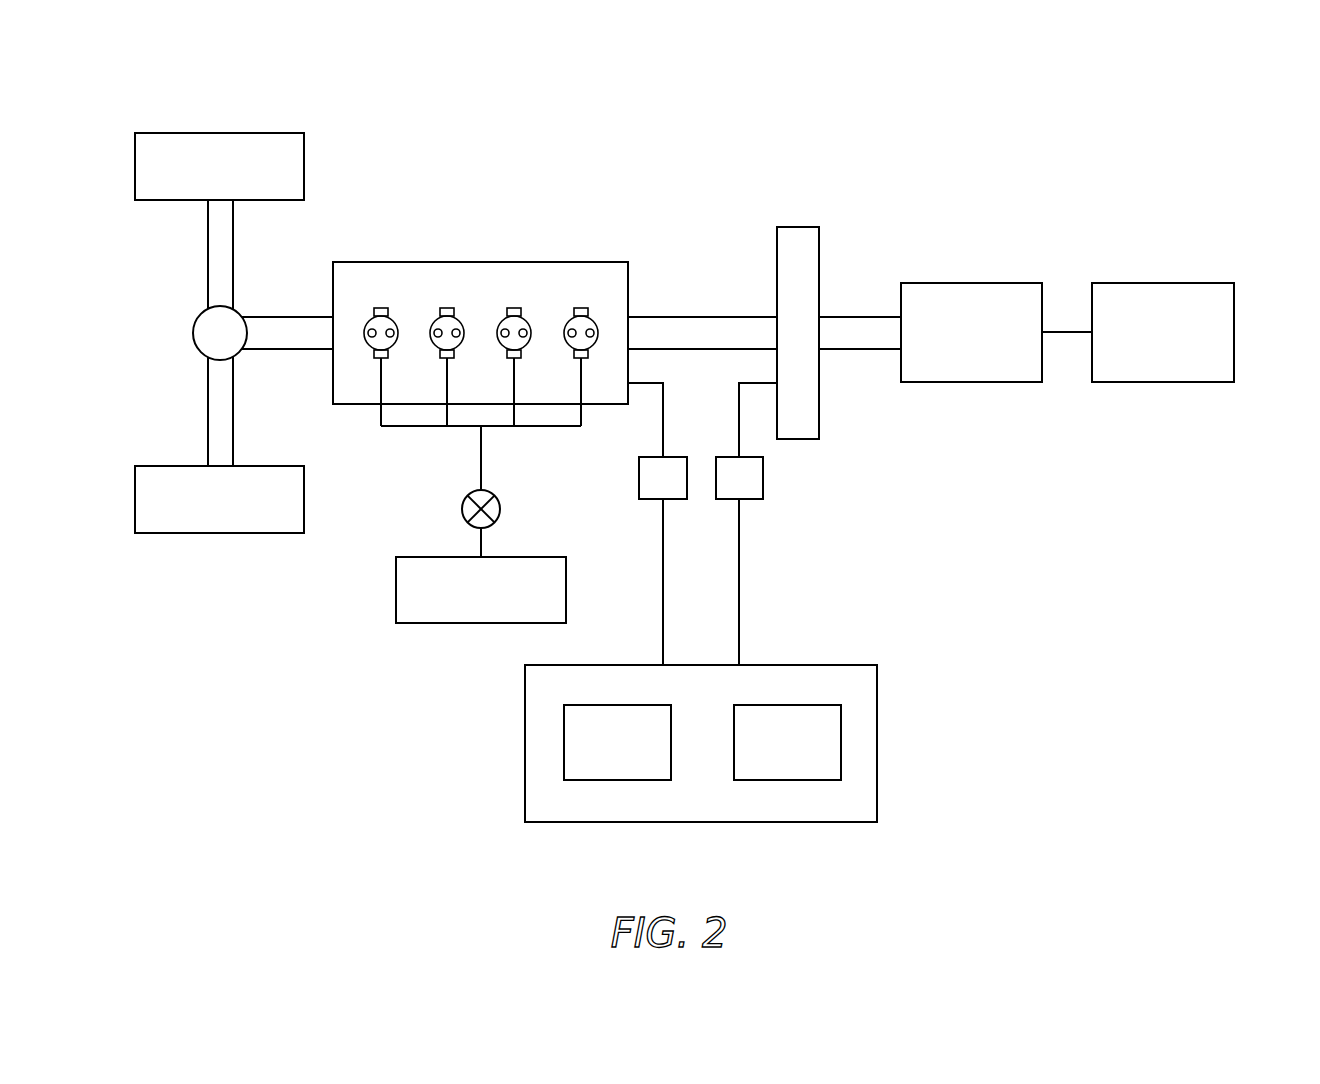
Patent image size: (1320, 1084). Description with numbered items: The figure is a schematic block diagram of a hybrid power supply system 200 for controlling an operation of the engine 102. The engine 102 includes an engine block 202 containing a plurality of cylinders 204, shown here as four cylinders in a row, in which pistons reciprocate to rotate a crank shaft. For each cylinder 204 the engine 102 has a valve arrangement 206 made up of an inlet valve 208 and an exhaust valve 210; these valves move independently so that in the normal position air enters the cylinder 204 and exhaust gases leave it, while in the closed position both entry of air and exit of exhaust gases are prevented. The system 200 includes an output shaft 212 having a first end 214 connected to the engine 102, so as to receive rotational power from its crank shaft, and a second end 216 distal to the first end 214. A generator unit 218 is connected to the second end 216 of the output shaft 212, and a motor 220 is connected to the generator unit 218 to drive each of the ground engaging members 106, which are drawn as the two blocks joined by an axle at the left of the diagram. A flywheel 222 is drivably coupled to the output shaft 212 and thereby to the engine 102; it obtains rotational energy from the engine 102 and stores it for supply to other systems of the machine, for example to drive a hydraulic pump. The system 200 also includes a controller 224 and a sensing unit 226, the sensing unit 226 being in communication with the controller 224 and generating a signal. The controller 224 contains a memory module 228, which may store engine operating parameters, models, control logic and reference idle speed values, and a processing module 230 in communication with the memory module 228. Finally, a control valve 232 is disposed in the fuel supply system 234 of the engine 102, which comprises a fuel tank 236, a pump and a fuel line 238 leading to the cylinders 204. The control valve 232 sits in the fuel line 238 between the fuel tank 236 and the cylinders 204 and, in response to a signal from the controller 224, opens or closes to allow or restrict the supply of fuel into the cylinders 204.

The hybrid power supply system 200 is at (1187, 124).
The engine 102 is at (555, 165).
The ground engaging members 106 is at (153, 202).
The engine block 202 is at (333, 288).
The cylinders 204 is at (396, 328).
The valve arrangement 206 is at (358, 353).
The inlet valve 208 is at (372, 307).
The exhaust valve 210 is at (397, 350).
The output shaft 212 is at (714, 247).
The first end 214 is at (630, 317).
The second end 216 is at (900, 317).
The generator unit 218 is at (973, 283).
The motor 220 is at (1163, 283).
The flywheel 222 is at (797, 227).
The controller 224 is at (525, 742).
The sensing unit 226 is at (676, 499).
The memory module 228 is at (617, 780).
The processing module 230 is at (787, 780).
The control valve 232 is at (462, 508).
The fuel supply system 234 is at (357, 558).
The fuel tank 236 is at (396, 612).
The fuel line 238 is at (482, 542).